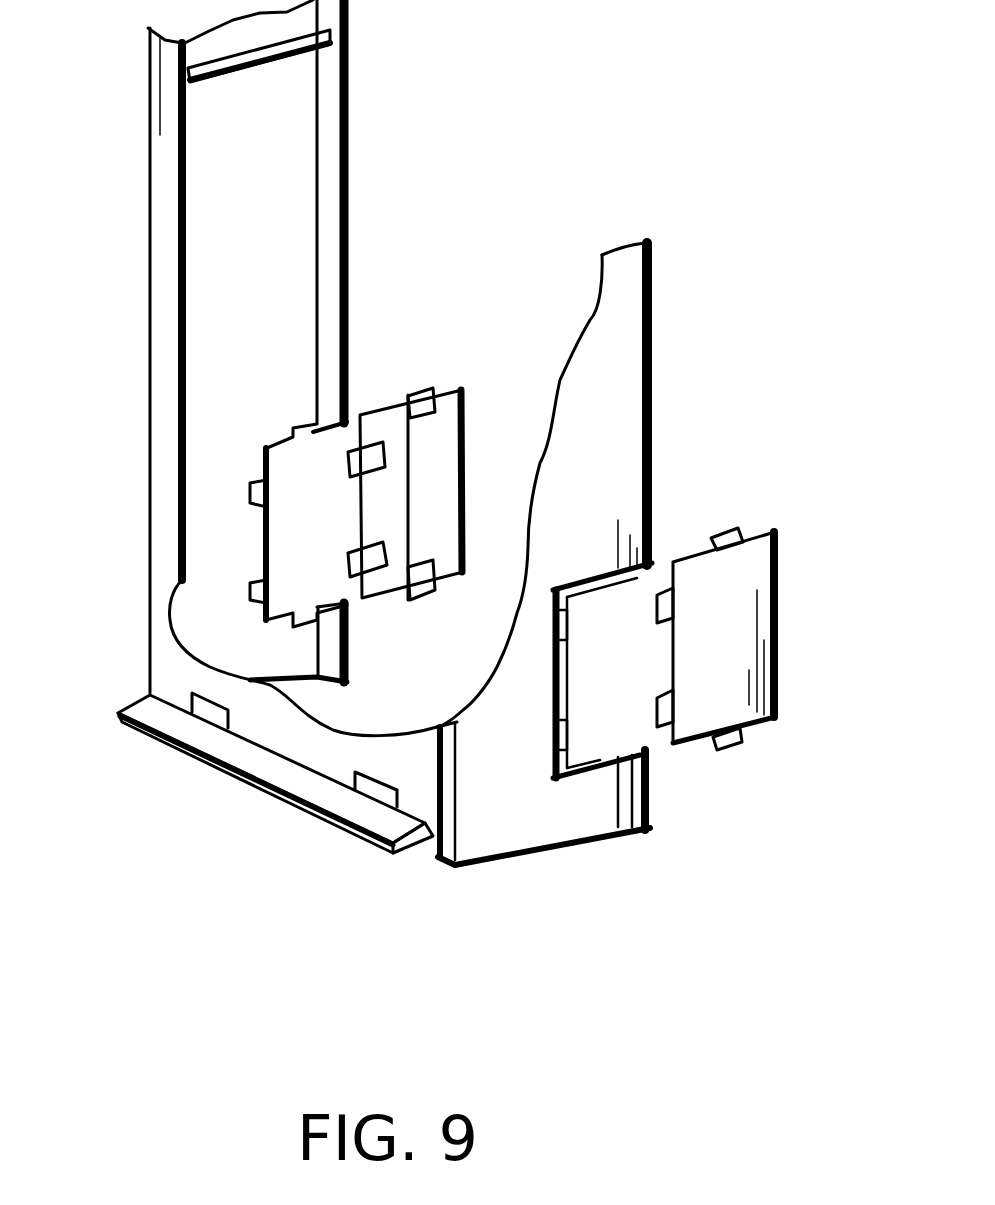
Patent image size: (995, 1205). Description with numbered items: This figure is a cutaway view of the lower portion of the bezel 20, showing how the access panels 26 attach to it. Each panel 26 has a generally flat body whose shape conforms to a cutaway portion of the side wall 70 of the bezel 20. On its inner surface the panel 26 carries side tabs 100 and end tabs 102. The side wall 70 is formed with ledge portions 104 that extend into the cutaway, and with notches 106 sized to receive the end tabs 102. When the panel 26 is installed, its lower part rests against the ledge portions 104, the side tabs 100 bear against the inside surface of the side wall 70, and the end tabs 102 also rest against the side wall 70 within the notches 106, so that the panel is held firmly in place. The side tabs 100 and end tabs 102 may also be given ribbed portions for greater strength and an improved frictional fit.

The bezel 20 is at (148, 297).
The access panel 26 is at (450, 468).
The side wall 70 is at (600, 420).
The side tabs 100 is at (418, 385).
The end tabs 102 is at (360, 560).
The ledge portions 104 is at (588, 777).
The notches 106 is at (250, 495).